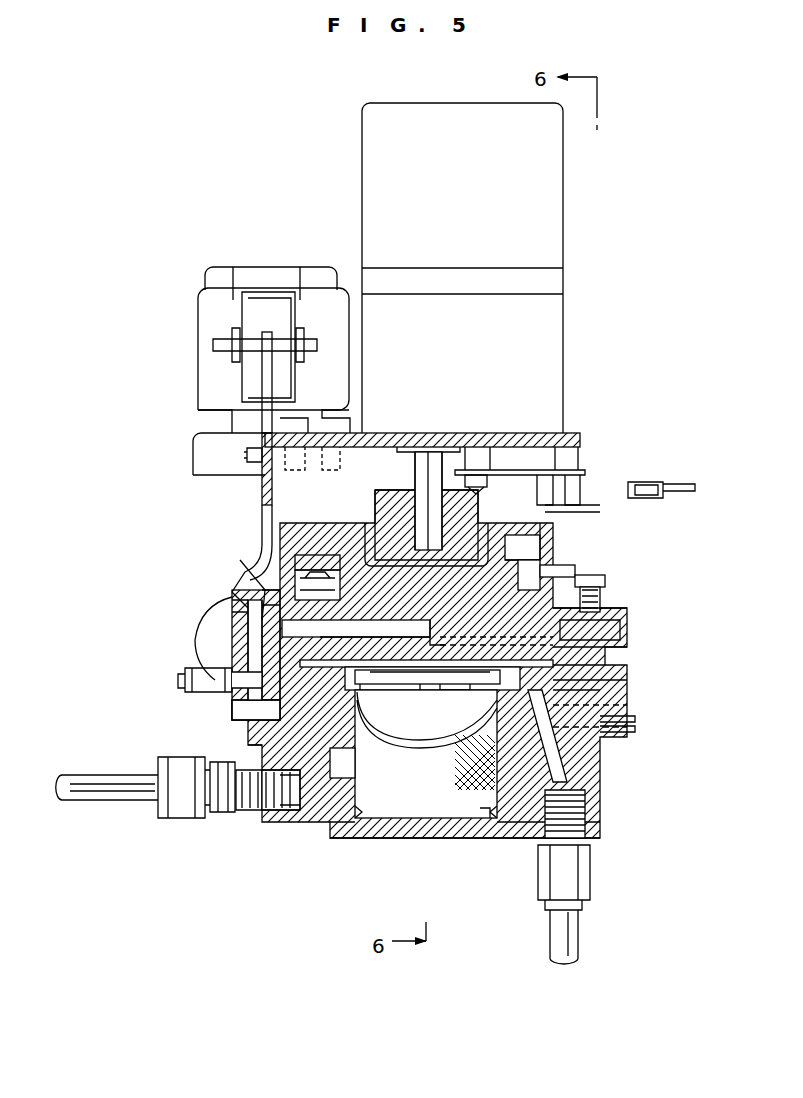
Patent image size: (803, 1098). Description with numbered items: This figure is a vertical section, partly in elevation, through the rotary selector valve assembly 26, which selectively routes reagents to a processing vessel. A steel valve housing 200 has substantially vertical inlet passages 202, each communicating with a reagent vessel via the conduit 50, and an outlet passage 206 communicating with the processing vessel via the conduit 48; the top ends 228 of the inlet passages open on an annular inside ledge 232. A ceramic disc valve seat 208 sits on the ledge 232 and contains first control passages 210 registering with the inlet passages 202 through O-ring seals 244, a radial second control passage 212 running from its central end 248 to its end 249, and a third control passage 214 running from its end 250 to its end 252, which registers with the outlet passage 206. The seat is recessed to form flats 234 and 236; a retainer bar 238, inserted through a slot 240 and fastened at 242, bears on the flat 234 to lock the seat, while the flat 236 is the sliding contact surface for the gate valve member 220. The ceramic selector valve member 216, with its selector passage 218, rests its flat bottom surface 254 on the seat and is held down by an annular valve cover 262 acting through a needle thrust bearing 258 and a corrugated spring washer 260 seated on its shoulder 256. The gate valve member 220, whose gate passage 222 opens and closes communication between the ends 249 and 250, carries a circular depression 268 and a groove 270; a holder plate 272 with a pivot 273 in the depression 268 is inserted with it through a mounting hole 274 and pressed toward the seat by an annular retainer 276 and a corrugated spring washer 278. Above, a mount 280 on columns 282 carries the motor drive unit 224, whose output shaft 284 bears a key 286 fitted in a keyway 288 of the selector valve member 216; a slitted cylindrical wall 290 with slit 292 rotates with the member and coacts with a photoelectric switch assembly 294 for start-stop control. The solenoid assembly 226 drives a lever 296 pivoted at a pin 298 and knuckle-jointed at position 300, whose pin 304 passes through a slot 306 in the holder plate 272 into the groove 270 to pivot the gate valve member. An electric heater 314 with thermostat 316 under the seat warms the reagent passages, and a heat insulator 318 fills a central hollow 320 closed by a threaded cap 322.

The rotary selector valve assembly 26 is at (626, 193).
The conduit 48 is at (100, 800).
The conduit 50 is at (580, 936).
The valve housing 200 is at (630, 700).
The inlet passages 202 is at (570, 760).
The outlet passage 206 is at (322, 830).
The valve seat 208 is at (335, 628).
The first control passages 210 is at (600, 674).
The second control passage 212 is at (440, 652).
The third control passage 214 is at (352, 700).
The selector valve member 216 is at (560, 540).
The selector passage 218 is at (425, 625).
The gate valve member 220 is at (240, 815).
The gate passage 222 is at (222, 815).
The motor drive unit 224 is at (462, 268).
The solenoid assembly 226 is at (205, 310).
The top ends of the inlet passages 228 is at (632, 720).
The annular inside ledge 232 is at (590, 690).
The flat surface 234 is at (640, 622).
The flat surface (second contact surface) 236 is at (265, 640).
The retainer bar 238 is at (610, 652).
The slot 240 is at (632, 640).
The bolt or screw 242 is at (622, 628).
The O-ring seals 244 is at (460, 684).
The end of second control passage 248 is at (445, 640).
The end of second control passage 249 is at (312, 556).
The end of third control passage 250 is at (252, 815).
The end of third control passage 252 is at (345, 765).
The flat bottom surface 254 is at (515, 540).
The annular shoulder 256 is at (545, 562).
The needle thrust bearing 258 is at (602, 596).
The corrugated spring washer 260 is at (580, 570).
The annular valve cover 262 is at (600, 580).
The circular depression 268 is at (255, 612).
The groove 270 is at (255, 730).
The holder plate 272 is at (265, 580).
The pivot 273 is at (258, 625).
The mounting hole 274 is at (262, 600).
The annular retainer 276 is at (250, 712).
The corrugated spring washer 278 is at (255, 596).
The mount 280 is at (470, 433).
The columns 282 is at (566, 440).
The output shaft 284 is at (415, 470).
The key 286 is at (388, 510).
The keyway 288 is at (496, 470).
The cylindrical wall 290 is at (620, 497).
The slit 292 is at (575, 490).
The photoelectric switch assembly 294 is at (548, 470).
The lever 296 is at (262, 492).
The pin 298 is at (244, 455).
The knuckle joint 300 is at (267, 330).
The pin 304 is at (236, 700).
The slot 306 is at (236, 680).
The electric heater 314 is at (395, 684).
The thermostat 316 is at (418, 742).
The heat insulator 318 is at (450, 800).
The hollow 320 is at (490, 835).
The threaded cap 322 is at (393, 838).